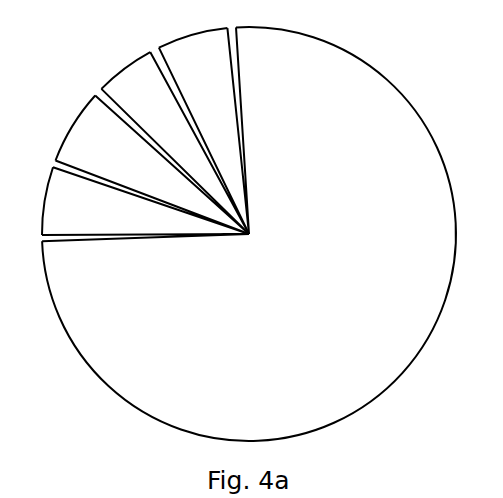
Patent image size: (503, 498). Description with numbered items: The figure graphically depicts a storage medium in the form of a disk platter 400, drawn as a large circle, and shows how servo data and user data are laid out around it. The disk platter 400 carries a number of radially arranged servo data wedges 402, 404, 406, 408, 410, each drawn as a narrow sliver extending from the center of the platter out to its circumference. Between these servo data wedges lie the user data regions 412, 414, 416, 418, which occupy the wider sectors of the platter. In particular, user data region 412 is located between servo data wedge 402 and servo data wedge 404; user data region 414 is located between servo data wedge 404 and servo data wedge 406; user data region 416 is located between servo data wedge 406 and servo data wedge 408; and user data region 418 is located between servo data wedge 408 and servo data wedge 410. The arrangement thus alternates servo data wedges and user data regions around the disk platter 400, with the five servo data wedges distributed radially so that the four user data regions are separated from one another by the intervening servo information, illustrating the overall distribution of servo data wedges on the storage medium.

The disk platter 400 is at (335, 338).
The servo data wedge 402 is at (102, 238).
The servo data wedge 404 is at (113, 184).
The servo data wedge 406 is at (140, 135).
The servo data wedge 408 is at (163, 77).
The servo data wedge 410 is at (231, 65).
The user data region 412 is at (85, 216).
The user data region 414 is at (108, 150).
The user data region 416 is at (186, 145).
The user data region 418 is at (230, 125).